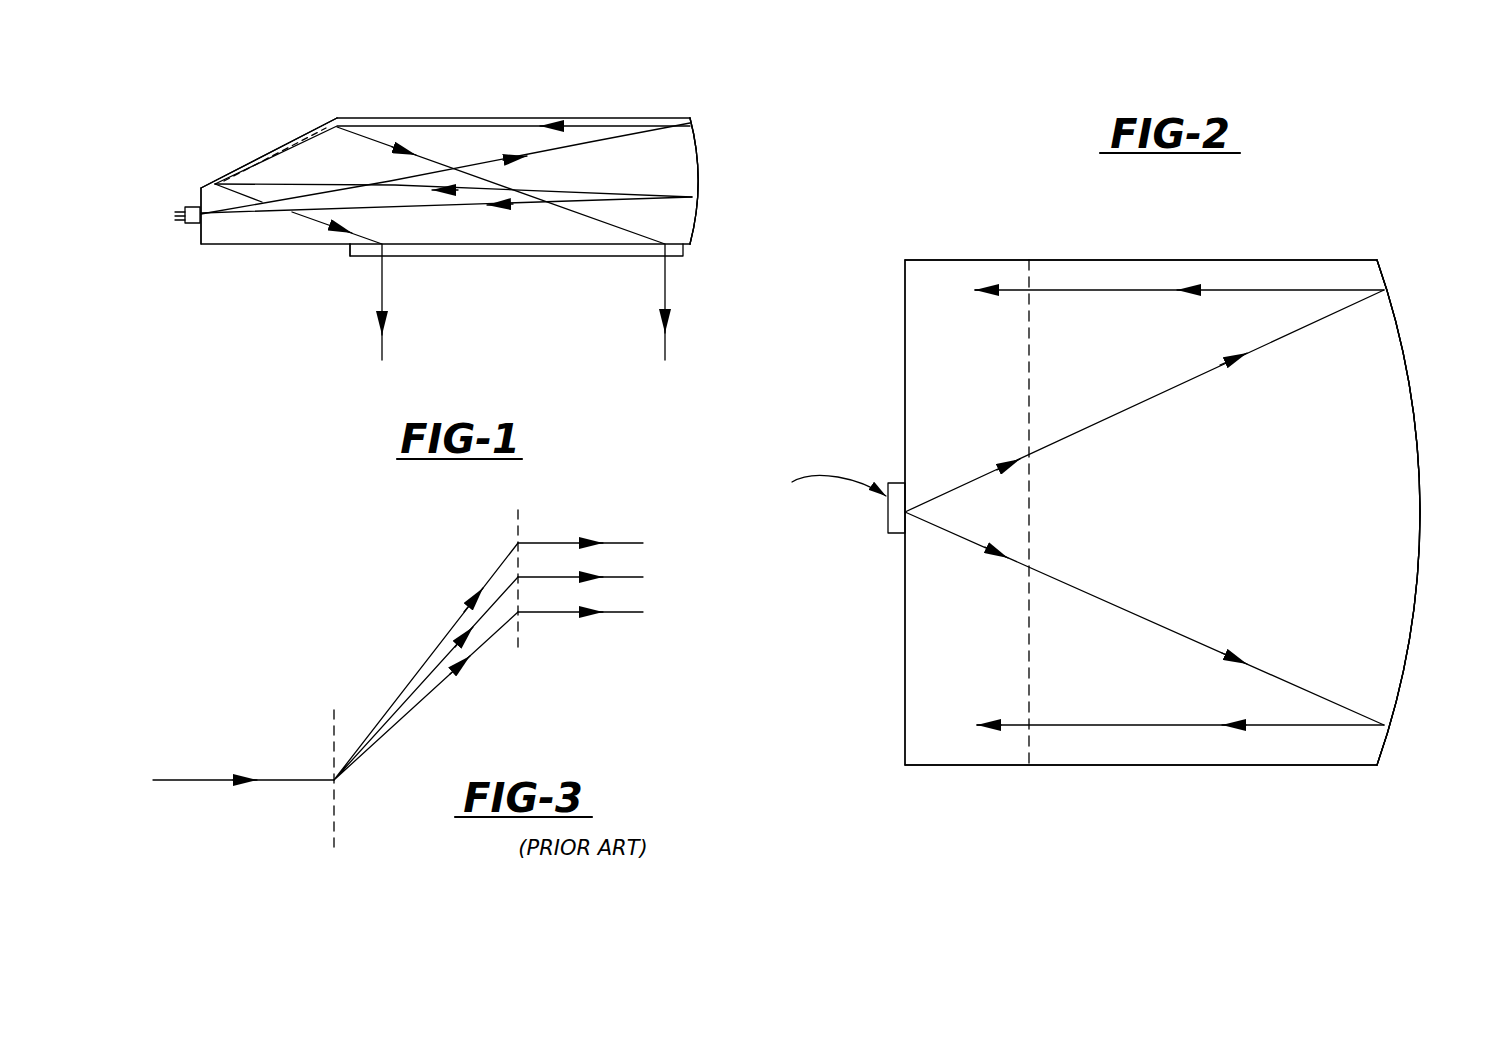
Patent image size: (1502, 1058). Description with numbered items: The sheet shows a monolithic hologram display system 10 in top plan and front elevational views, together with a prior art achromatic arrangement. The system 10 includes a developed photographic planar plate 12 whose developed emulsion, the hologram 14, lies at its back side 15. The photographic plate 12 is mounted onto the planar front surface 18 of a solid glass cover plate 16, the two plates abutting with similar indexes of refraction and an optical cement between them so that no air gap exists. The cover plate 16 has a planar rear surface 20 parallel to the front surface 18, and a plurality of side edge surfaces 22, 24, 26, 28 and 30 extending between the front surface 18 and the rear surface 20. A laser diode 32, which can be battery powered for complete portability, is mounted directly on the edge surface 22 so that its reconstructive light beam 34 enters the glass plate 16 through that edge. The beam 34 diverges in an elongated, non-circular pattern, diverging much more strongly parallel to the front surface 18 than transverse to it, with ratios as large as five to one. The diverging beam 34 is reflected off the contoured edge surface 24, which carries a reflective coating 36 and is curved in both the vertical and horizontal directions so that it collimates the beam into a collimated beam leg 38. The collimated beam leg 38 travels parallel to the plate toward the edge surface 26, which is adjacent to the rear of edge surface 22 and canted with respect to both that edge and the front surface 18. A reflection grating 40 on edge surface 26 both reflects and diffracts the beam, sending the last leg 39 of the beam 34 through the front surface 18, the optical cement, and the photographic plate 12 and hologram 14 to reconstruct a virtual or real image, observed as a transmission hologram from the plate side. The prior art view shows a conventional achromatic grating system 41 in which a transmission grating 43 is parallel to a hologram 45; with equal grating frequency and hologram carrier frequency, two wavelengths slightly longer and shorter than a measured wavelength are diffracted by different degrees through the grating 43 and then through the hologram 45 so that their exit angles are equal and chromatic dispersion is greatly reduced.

In FIG. 1, the monolithic hologram display system 10 is at (705, 243).
In FIG. 2, the monolithic hologram display system 10 is at (1366, 229).
In FIG. 1, the developed photographic planar plate 12 is at (543, 250).
In FIG. 1, the hologram 14 is at (347, 247).
In FIG. 1, the back side 15 is at (622, 243).
In FIG. 1, the solid glass cover plate 16 is at (705, 123).
In FIG. 1, the planar front surface 18 is at (273, 248).
In FIG. 2, the planar front surface 18 is at (1383, 600).
In FIG. 1, the planar rear surface 20 is at (413, 118).
In FIG. 2, the planar rear surface 20 is at (1345, 360).
In FIG. 1, the edge surface 22 is at (200, 243).
In FIG. 2, the edge surface 22 is at (905, 369).
In FIG. 1, the contoured edge surface 24 is at (697, 183).
In FIG. 2, the contoured edge surface 24 is at (1420, 510).
In FIG. 1, the canted edge surface 26 is at (225, 180).
In FIG. 2, the canted edge surface 26 is at (952, 275).
In FIG. 2, the side edge surface 28 is at (1084, 260).
In FIG. 2, the side edge surface 30 is at (1208, 767).
In FIG. 1, the laser diode 32 is at (186, 226).
In FIG. 2, the laser diode 32 is at (888, 533).
In FIG. 1, the reconstructive light beam 34 is at (248, 228).
In FIG. 2, the reconstructive light beam 34 is at (1129, 416).
In FIG. 1, the reflective coating 36 is at (697, 147).
In FIG. 2, the reflective coating 36 is at (1411, 389).
In FIG. 1, the collimated beam leg 38 is at (287, 185).
In FIG. 2, the collimated beam leg 38 is at (1149, 286).
In FIG. 1, the last leg 39 is at (313, 220).
In FIG. 1, the reflection grating 40 is at (308, 132).
In FIG. 3, the conventional achromatic grating system 41 is at (336, 626).
In FIG. 3, the transmission grating 43 is at (335, 738).
In FIG. 3, the hologram 45 is at (519, 517).